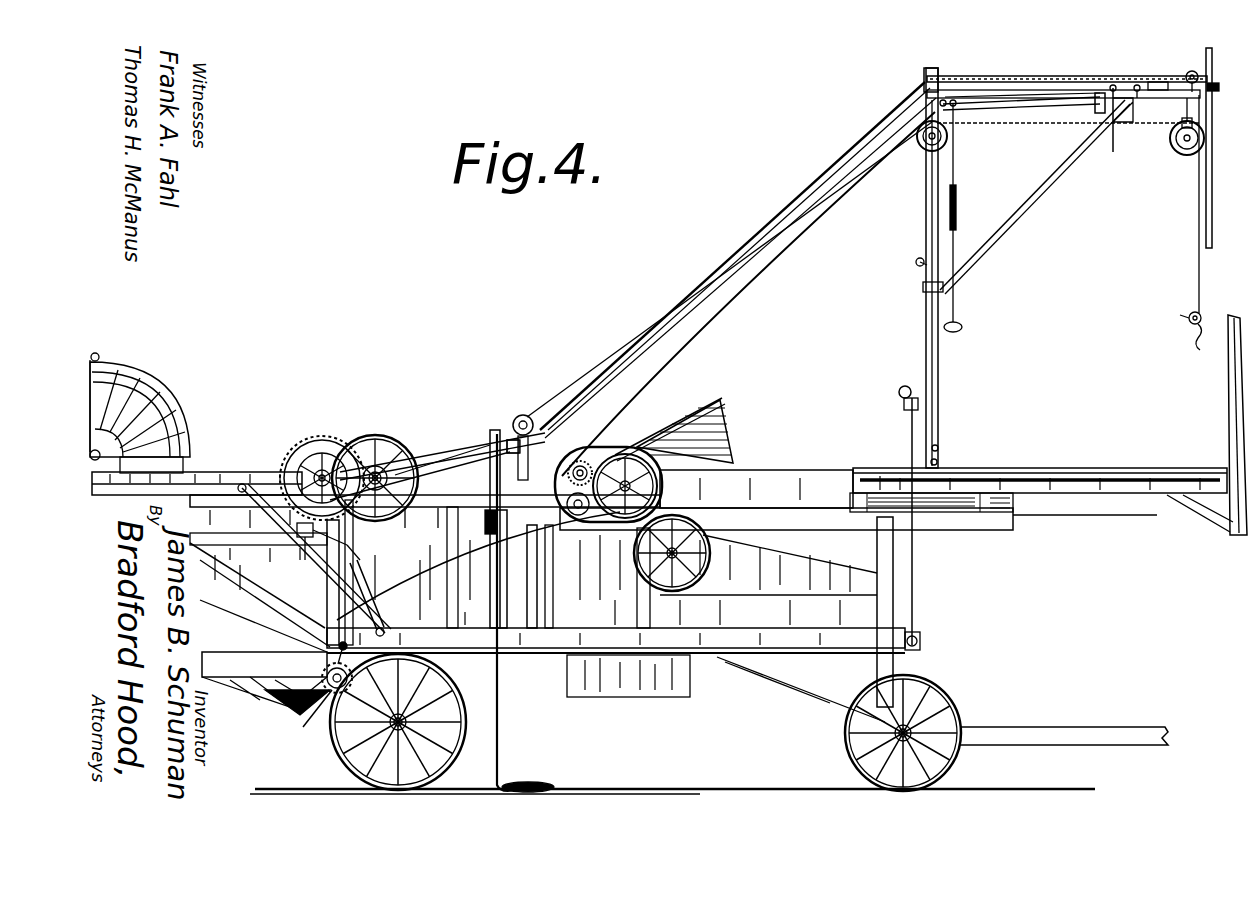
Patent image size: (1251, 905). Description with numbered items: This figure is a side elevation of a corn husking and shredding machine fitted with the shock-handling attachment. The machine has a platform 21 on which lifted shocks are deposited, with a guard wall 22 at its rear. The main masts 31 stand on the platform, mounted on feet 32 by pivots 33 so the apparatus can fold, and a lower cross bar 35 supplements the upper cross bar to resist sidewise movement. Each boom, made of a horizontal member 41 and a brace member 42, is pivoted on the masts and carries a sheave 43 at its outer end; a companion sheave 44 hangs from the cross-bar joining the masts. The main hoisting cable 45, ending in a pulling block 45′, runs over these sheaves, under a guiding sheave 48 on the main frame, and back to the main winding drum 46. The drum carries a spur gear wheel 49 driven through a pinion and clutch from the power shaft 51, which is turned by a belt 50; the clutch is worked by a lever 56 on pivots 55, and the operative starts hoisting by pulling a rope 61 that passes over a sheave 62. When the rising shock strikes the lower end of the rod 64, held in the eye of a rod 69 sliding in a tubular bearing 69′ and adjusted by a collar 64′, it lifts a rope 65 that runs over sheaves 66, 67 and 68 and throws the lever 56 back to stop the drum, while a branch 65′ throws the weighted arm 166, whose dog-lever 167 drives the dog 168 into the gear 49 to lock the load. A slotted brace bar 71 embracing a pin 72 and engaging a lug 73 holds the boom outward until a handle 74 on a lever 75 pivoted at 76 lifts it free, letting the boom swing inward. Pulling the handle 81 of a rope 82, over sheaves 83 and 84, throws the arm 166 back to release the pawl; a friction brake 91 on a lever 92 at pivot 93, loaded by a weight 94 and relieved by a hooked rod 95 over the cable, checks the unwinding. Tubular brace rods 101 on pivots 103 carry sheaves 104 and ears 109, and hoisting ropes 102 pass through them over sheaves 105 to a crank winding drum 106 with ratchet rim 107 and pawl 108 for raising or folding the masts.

The platform 21 is at (1065, 468).
The guard wall 22 is at (1228, 398).
The main uprights or masts 31 is at (940, 380).
The feet 32 is at (938, 463).
The pivots 33 is at (938, 450).
The lower-positioned cross bar 35 is at (917, 265).
The horizontal member of boom 41 is at (290, 462).
The brace member of boom 42 is at (1035, 210).
The sheave 43 is at (1178, 153).
The sheave 44 is at (924, 152).
The main hoisting cable 45 is at (427, 432).
The pulling block 45′ is at (1188, 322).
The main winding drum 46 is at (322, 440).
The guiding sheave 48 is at (525, 412).
The spur gear wheel 49 is at (338, 440).
The belt 50 is at (440, 447).
The power shaft 51 is at (380, 468).
The pivots 55 is at (418, 450).
The lever 56 is at (442, 460).
The rope 61 is at (500, 725).
The sheave 62 is at (630, 553).
The rod 64 is at (1205, 200).
The collar 64′ is at (1218, 85).
The rope 65 is at (680, 347).
The branch of rope 65′ is at (478, 566).
The sheave 66 is at (1185, 69).
The sheave 67 is at (922, 84).
The sheave 68 is at (599, 488).
The rod with eye-opening 69 is at (1135, 86).
The tubular bearing 69′ is at (1160, 82).
The brace bar 71 is at (1068, 106).
The pin 72 is at (1113, 130).
The lug 73 is at (1110, 108).
The handle 74 is at (956, 178).
The lever 75 is at (1010, 103).
The pivot 76 is at (1092, 97).
The handle 81 is at (898, 390).
The rope 82 is at (905, 428).
The sheave 83 is at (920, 641).
The sheave 84 is at (320, 630).
The friction brake 91 is at (315, 528).
The lever 92 is at (436, 521).
The pivot 93 is at (411, 521).
The weight 94 is at (480, 522).
The hooked rod 95 is at (490, 529).
The brace rod 101 is at (812, 218).
The hoisting rope 102 is at (486, 569).
The pivots 103 is at (588, 456).
The sheave 104 is at (930, 100).
The sheave 105 is at (616, 638).
The winding drum 106 is at (314, 716).
The ratchet rim 107 is at (324, 684).
The pawl 108 is at (322, 653).
The ears 109 is at (956, 105).
The weighted arm 166 is at (385, 598).
The dog-lever 167 is at (318, 570).
The dog 168 is at (348, 546).